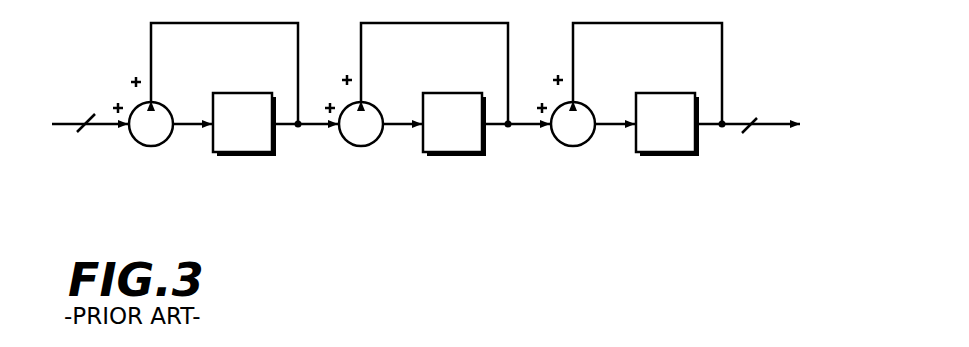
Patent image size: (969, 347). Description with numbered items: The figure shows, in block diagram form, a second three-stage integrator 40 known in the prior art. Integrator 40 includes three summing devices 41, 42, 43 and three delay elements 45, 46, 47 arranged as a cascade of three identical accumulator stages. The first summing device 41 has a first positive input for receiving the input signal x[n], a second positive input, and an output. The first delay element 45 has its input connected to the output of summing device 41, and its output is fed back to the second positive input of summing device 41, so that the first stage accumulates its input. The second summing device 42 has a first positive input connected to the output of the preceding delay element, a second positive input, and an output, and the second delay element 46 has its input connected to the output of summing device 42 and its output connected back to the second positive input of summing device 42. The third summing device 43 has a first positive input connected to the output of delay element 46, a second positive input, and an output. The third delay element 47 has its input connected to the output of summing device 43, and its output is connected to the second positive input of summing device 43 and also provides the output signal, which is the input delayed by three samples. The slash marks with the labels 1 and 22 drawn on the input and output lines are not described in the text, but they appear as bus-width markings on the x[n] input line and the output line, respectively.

The three-stage integrator 40 is at (196, 236).
The input signal bus width indicator 1 is at (84, 115).
The summing device 41 is at (152, 146).
The summing device 42 is at (362, 146).
The summing device 43 is at (574, 146).
The delay element 45 is at (240, 93).
The delay element 46 is at (450, 93).
The delay element 47 is at (663, 93).
The output signal bus width indicator 22 is at (756, 113).